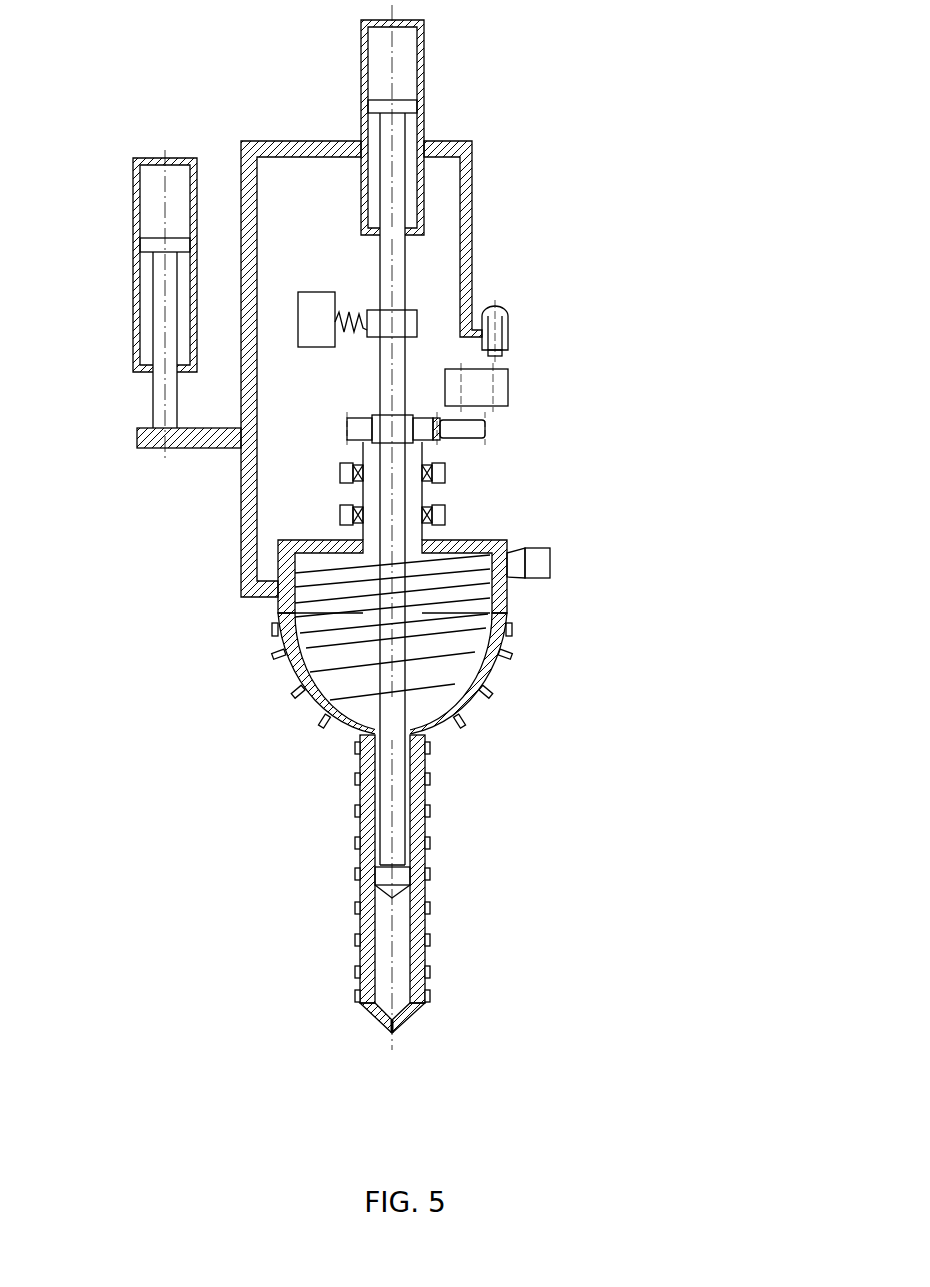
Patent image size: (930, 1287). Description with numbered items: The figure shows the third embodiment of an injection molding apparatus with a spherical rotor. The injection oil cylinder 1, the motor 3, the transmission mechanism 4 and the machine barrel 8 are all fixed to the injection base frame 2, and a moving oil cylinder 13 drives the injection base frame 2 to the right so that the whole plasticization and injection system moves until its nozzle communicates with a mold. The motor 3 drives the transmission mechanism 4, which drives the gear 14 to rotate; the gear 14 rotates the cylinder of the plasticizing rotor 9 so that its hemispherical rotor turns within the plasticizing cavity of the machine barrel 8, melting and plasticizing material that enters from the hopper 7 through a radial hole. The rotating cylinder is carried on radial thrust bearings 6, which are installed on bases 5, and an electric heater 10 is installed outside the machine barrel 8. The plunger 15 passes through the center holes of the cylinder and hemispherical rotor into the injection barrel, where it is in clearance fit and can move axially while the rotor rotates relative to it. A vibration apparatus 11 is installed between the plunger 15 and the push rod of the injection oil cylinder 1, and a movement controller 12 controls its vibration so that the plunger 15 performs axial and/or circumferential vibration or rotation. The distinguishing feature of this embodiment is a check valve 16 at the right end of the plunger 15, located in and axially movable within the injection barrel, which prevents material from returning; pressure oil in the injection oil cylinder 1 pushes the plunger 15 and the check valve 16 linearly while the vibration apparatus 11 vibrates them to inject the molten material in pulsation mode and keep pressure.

The injection oil cylinder 1 is at (425, 52).
The injection base frame 2 is at (475, 166).
The motor 3 is at (508, 331).
The transmission mechanism 4 is at (500, 386).
The bases 5 is at (445, 473).
The radial thrust bearings 6 is at (445, 514).
The hopper 7 is at (540, 563).
The machine barrel 8 is at (500, 632).
The plasticizing rotor 9 is at (455, 673).
The electric heater 10 is at (428, 875).
The vibration apparatus 11 is at (392, 322).
The movement controller 12 is at (314, 303).
The moving oil cylinder 13 is at (137, 258).
The gear 14 is at (347, 428).
The plunger 15 is at (386, 746).
The check valve 16 is at (383, 879).